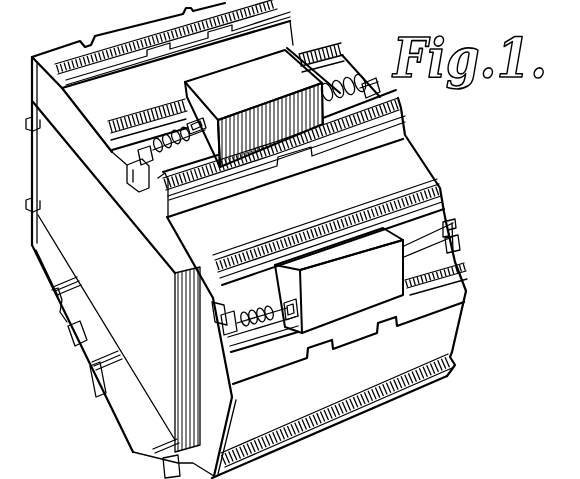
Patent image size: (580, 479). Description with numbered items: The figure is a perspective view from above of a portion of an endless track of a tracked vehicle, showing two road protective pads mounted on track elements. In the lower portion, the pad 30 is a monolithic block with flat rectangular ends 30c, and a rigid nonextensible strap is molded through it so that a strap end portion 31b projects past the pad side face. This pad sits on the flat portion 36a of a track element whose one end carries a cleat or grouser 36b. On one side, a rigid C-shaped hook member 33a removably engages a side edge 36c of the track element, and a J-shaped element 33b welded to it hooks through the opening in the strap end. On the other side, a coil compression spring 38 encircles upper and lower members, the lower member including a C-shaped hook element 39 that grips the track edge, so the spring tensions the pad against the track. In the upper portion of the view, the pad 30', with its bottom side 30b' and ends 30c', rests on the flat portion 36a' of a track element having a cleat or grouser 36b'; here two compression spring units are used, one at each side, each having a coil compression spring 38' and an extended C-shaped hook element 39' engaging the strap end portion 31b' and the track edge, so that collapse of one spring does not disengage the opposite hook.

The pad 30' is at (187, 44).
The bottom side of pad 30b' is at (178, 48).
The strap end portion 31b' is at (254, 108).
The coil compression spring 38' is at (252, 98).
The C-shaped hook element 39' is at (110, 189).
The cleat or grouser 36b' is at (307, 154).
The flat portion of track element 36a' is at (279, 140).
The end of pad 30c' is at (286, 176).
The end of pad 30c is at (328, 232).
The flat portion of track element 36a is at (471, 219).
The C-shaped hook member 33a is at (455, 227).
The J-shaped element 33b is at (432, 247).
The cleat or grouser 36b is at (460, 286).
The strap end portion 31b is at (339, 280).
The C-shaped hook element 39 is at (183, 324).
The side edge of track element 36c is at (222, 355).
The coil compression spring 38 is at (259, 337).
The pad 30 is at (338, 390).